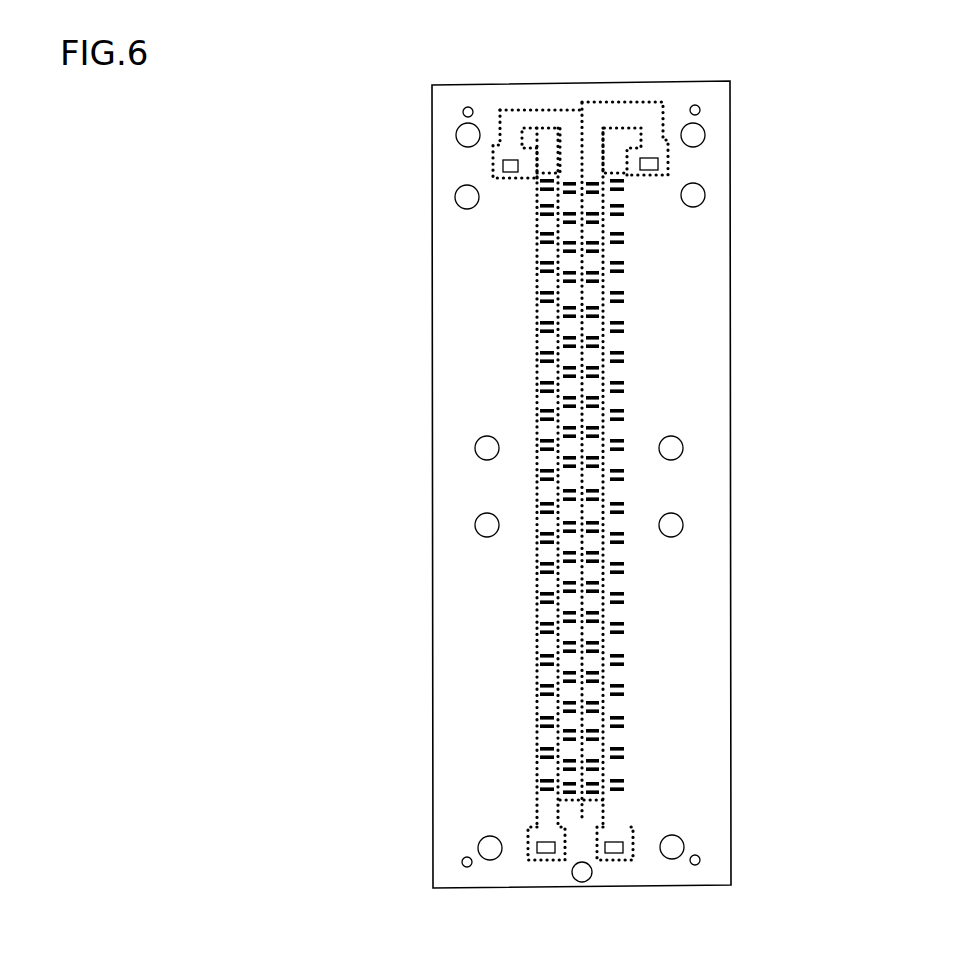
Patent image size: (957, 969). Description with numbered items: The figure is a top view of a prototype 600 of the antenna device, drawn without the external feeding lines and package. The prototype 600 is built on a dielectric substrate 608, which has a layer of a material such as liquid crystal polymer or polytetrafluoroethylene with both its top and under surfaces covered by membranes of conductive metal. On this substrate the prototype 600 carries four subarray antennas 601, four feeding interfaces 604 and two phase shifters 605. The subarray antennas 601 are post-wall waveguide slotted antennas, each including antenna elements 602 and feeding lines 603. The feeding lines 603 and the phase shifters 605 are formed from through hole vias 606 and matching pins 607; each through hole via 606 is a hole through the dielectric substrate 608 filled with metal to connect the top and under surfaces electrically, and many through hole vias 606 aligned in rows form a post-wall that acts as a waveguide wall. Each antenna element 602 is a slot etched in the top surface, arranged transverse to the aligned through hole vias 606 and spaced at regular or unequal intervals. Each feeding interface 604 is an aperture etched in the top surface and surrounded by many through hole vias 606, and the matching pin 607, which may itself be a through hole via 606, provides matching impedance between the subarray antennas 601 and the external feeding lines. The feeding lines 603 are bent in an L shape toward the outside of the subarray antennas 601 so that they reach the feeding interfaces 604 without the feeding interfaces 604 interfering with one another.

The prototype 600 is at (432, 422).
The subarray antenna 601 is at (775, 182).
The antenna element 602 is at (612, 323).
The feeding line 603 is at (617, 403).
The feeding interface 604 is at (653, 160).
The phase shifter 605 is at (533, 112).
The through hole via 606 is at (537, 243).
The matching pin 607 is at (501, 113).
The dielectric substrate 608 is at (446, 643).